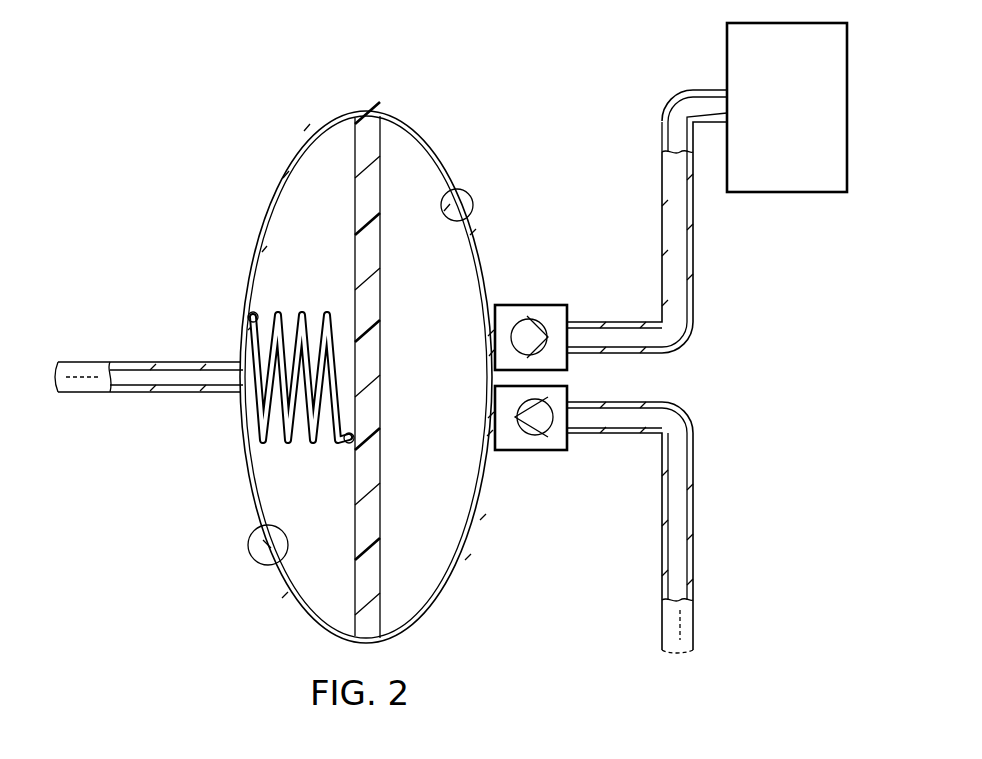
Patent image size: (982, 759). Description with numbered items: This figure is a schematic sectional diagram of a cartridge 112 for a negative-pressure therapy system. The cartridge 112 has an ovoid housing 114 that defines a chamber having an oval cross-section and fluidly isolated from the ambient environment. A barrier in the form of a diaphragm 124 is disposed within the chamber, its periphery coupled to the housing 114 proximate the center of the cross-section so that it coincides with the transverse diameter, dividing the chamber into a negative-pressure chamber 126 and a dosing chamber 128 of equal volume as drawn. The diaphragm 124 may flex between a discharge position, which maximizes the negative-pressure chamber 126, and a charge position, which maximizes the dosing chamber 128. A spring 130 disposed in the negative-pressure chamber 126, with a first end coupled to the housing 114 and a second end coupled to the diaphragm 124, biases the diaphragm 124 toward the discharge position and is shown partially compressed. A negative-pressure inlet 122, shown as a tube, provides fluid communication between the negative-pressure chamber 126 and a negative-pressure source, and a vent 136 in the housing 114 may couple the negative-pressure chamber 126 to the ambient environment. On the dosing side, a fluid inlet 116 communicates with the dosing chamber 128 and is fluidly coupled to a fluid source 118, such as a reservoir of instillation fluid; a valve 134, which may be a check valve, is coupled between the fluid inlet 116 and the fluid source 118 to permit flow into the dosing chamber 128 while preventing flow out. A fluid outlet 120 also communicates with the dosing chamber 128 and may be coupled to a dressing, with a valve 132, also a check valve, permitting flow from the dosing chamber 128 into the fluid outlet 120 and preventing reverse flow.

The cartridge 112 is at (472, 123).
The housing 114 is at (333, 119).
The fluid inlet 116 is at (492, 342).
The fluid source 118 is at (764, 125).
The fluid outlet 120 is at (492, 412).
The negative-pressure inlet 122 is at (238, 372).
The diaphragm 124 is at (381, 466).
The negative-pressure chamber 126 is at (256, 540).
The dosing chamber 128 is at (471, 222).
The spring 130 is at (344, 447).
The valve 132 is at (532, 452).
The valve 134 is at (531, 304).
The vent 136 is at (285, 174).